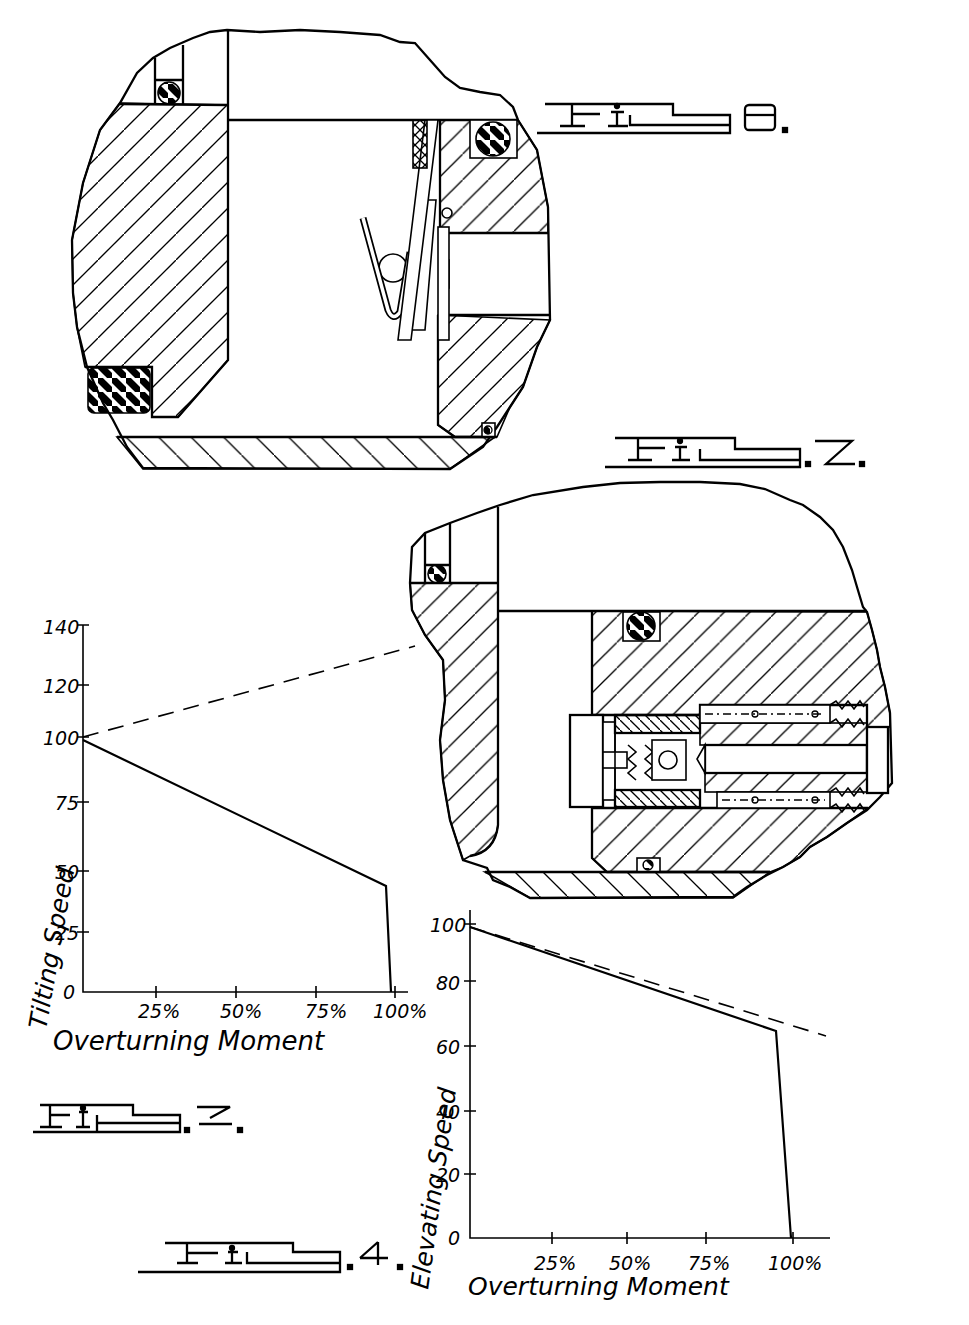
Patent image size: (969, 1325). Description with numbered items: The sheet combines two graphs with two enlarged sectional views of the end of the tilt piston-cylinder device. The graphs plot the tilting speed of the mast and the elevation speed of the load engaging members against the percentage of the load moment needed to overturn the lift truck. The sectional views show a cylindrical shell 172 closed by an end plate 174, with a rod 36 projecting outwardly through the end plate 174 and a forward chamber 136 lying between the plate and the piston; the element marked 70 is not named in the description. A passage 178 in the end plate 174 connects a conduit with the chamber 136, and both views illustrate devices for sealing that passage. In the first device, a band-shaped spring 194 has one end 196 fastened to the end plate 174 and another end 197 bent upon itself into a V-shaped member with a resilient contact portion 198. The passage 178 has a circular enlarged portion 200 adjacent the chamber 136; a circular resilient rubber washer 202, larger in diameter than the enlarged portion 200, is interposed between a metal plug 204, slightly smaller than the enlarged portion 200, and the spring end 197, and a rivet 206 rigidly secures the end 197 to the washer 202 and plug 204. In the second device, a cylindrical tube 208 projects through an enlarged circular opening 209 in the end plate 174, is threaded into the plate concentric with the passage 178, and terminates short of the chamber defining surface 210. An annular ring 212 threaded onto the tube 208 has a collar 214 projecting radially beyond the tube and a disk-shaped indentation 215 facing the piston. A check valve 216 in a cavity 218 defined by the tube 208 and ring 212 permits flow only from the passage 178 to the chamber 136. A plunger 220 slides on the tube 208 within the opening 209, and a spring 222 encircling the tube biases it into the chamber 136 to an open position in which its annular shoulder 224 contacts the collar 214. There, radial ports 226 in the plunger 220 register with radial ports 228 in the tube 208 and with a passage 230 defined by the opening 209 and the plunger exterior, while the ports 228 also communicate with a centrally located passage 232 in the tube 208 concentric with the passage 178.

In FIG. 6, the upper housing block 70 is at (170, 240).
In FIG. 7, the upper housing block 70 is at (480, 676).
In FIG. 6, the rod 36 is at (348, 84).
In FIG. 7, the rod 36 is at (705, 527).
In FIG. 6, the forward chamber 136 is at (330, 388).
In FIG. 7, the forward chamber 136 is at (548, 858).
In FIG. 6, the cylindrical shell 172 is at (277, 453).
In FIG. 7, the cylindrical shell 172 is at (692, 893).
In FIG. 6, the end plate 174 is at (490, 385).
In FIG. 7, the end plate 174 is at (780, 645).
In FIG. 6, the passage 178 is at (520, 317).
In FIG. 7, the passage 178 is at (852, 830).
In FIG. 6, the spring 194 is at (404, 141).
In FIG. 6, the end of spring 196 is at (425, 173).
In FIG. 6, the end of spring 197 is at (386, 318).
In FIG. 6, the resilient contact portion 198 is at (364, 229).
In FIG. 6, the circular enlarged portion 200 is at (460, 194).
In FIG. 6, the circular resilient rubber washer 202 is at (436, 262).
In FIG. 6, the metal plug 204 is at (462, 240).
In FIG. 6, the rivet 206 is at (449, 275).
In FIG. 7, the cylindrical tube 208 is at (852, 726).
In FIG. 7, the enlarged circular opening 209 is at (662, 704).
In FIG. 7, the chamber defining surface 210 is at (592, 632).
In FIG. 7, the annular ring 212 is at (580, 721).
In FIG. 7, the collar 214 is at (602, 742).
In FIG. 7, the disk-shaped indentation 215 is at (606, 772).
In FIG. 7, the check valve 216 is at (682, 745).
In FIG. 7, the cavity 218 is at (632, 842).
In FIG. 7, the plunger 220 is at (647, 704).
In FIG. 7, the spring 222 is at (766, 706).
In FIG. 7, the annular shoulder 224 is at (594, 806).
In FIG. 7, the radial ports 226 is at (699, 842).
In FIG. 7, the radial ports 228 is at (778, 812).
In FIG. 7, the passage 230 is at (707, 705).
In FIG. 7, the centrally located passage 232 is at (775, 812).